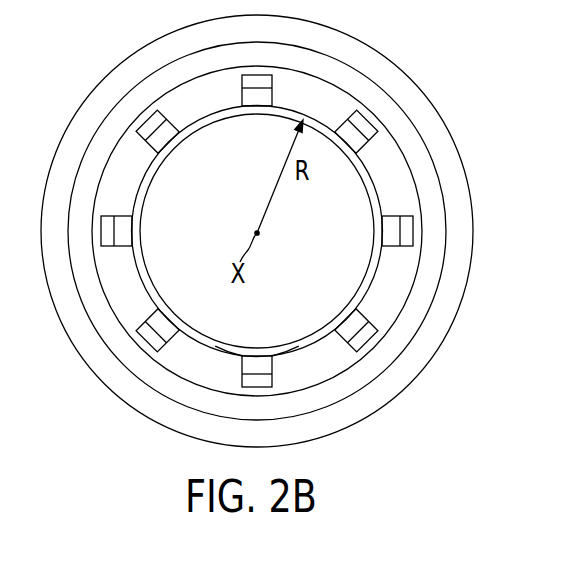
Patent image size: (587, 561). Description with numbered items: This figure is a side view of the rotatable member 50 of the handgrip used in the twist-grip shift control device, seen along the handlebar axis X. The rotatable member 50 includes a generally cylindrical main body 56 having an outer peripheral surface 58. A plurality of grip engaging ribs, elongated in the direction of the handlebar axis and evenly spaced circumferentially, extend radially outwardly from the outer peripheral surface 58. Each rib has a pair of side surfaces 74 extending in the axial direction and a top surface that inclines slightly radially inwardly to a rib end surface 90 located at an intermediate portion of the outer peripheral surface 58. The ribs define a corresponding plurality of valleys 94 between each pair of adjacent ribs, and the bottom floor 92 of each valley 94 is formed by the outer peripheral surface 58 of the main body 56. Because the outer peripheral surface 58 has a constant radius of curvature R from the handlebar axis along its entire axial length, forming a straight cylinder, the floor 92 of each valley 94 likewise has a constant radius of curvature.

The rotatable member 50 is at (78, 66).
The main body 56 is at (372, 273).
The outer peripheral surface 58 is at (375, 180).
The side surfaces 74 is at (172, 133).
The rib end surface 90 is at (163, 132).
The bottom floor 92 is at (220, 357).
The valleys 94 is at (200, 375).